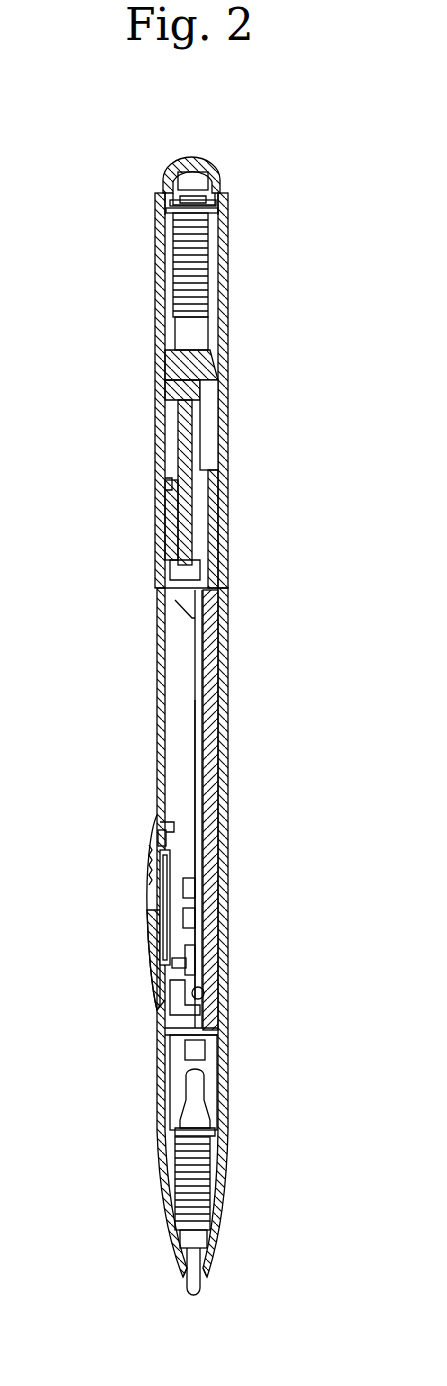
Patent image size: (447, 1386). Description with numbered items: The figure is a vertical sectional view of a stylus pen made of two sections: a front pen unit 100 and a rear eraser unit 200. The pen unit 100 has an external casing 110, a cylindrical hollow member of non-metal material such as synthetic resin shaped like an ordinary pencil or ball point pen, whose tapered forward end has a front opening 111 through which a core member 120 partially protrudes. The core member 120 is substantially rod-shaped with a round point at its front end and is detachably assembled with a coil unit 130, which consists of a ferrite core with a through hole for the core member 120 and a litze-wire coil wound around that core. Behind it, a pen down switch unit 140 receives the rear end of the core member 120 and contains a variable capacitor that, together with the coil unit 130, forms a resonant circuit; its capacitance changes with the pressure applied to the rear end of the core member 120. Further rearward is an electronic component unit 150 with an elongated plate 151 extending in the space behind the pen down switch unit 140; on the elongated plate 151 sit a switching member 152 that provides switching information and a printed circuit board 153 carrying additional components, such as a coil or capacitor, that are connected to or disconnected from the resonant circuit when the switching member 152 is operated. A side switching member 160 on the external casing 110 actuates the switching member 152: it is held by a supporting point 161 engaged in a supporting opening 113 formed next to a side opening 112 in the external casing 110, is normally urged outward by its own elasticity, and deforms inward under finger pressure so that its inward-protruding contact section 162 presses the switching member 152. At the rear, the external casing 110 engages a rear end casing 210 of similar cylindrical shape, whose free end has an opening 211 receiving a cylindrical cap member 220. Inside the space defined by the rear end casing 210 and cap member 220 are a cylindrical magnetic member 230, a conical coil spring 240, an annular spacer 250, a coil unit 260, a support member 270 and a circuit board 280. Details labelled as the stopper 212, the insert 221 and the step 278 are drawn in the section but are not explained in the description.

The pen unit 100 is at (220, 966).
The external casing 110 is at (146, 961).
The front opening 111 is at (185, 1285).
The side opening 112 is at (157, 993).
The supporting opening 113 is at (160, 822).
The core member 120 is at (203, 1290).
The coil unit 130 is at (215, 1195).
The pen down switch unit 140 is at (213, 1083).
The electronic component unit 150 is at (201, 812).
The elongated plate 151 is at (195, 785).
The switching member 152 is at (195, 960).
The printed circuit board 153 is at (190, 787).
The side switching member 160 is at (106, 912).
The supporting point 161 is at (155, 835).
The contact section 162 is at (165, 945).
The eraser unit 200 is at (201, 344).
The rear end casing 210 is at (157, 353).
The opening 211 is at (165, 192).
The stopper 212 is at (158, 505).
The cap member 220 is at (181, 147).
The cap insert 221 is at (204, 158).
The cylindrical magnetic member 230 is at (222, 172).
The conical coil spring 240 is at (228, 197).
The annular spacer 250 is at (221, 212).
The coil unit 260 is at (208, 300).
The support member 270 is at (220, 396).
The engaging step 278 is at (163, 487).
The circuit board 280 is at (222, 490).